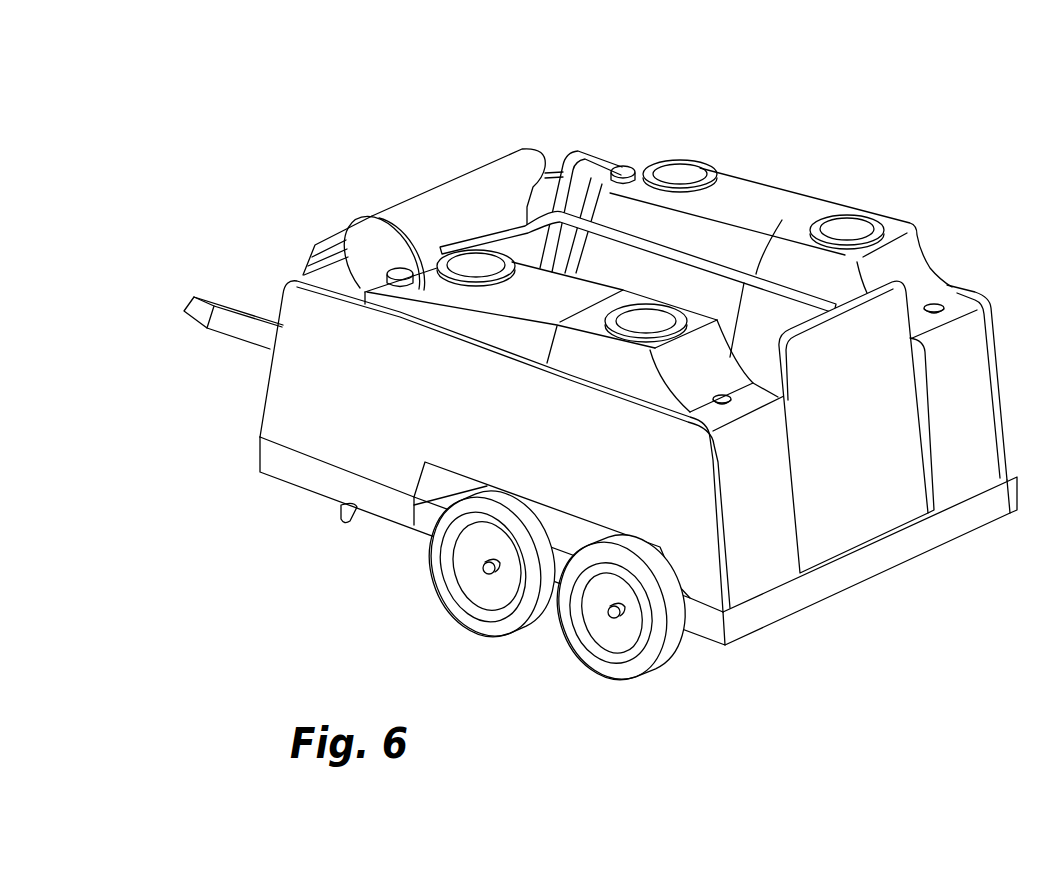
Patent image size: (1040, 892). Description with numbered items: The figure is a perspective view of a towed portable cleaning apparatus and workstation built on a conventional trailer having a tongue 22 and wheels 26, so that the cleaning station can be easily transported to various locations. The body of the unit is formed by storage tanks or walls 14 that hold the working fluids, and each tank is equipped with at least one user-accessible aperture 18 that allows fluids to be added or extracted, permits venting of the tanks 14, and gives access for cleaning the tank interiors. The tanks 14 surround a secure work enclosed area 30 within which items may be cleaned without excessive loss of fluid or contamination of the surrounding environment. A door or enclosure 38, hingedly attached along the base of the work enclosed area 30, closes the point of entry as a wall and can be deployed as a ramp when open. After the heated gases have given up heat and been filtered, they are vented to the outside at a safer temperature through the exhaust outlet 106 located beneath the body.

The storage tanks or walls 14 is at (750, 203).
The aperture 18 is at (678, 175).
The tongue 22 is at (227, 334).
The wheels 26 is at (624, 675).
The work enclosed area 30 is at (763, 309).
The door or enclosure 38 is at (854, 513).
The exhaust outlet 106 is at (340, 508).